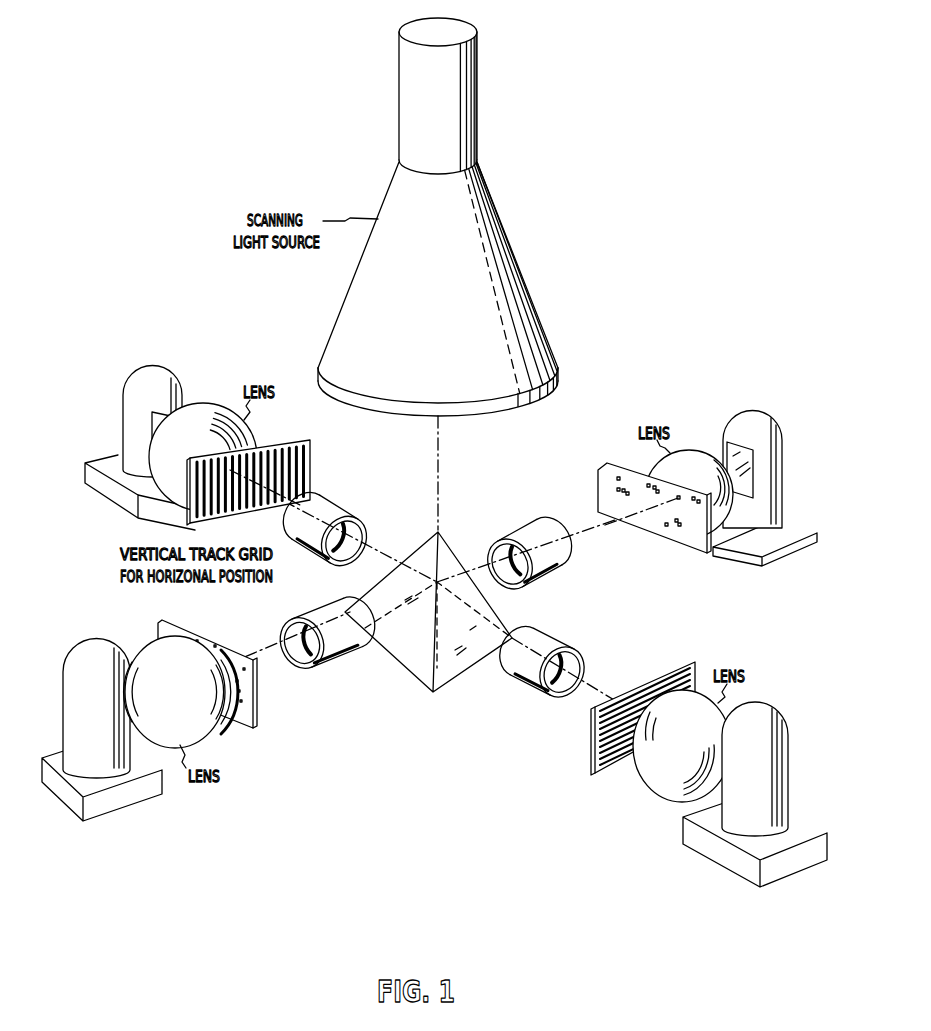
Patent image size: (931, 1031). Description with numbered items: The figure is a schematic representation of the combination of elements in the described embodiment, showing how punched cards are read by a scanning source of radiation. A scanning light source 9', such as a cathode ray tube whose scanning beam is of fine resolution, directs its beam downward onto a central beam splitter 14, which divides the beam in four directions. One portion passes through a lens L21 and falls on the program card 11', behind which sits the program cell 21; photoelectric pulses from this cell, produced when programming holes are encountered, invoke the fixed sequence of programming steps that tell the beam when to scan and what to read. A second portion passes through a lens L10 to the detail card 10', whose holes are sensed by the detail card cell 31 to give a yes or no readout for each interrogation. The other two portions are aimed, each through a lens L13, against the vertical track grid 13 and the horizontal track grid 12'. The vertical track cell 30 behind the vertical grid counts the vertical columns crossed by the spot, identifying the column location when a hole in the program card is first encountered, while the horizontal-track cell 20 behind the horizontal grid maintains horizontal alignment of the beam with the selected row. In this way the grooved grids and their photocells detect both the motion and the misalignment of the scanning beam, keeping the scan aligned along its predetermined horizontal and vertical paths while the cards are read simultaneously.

The scanning light source 9' is at (438, 217).
The vertical track cell 30 is at (130, 410).
The vertical track grid for horizontal position 13 is at (308, 470).
The lens for track grid L13 is at (338, 512).
The program cell 21 is at (782, 474).
The program card 11' is at (695, 524).
The detail card cell 31 is at (88, 643).
The detail card 10' is at (226, 702).
The lens for detail card L10 is at (333, 664).
The beam splitting pyramid 14 is at (412, 670).
The lens for program card L21 is at (550, 580).
The horizontal track grid 12' is at (593, 756).
The horizontal-track cell 20 is at (788, 773).